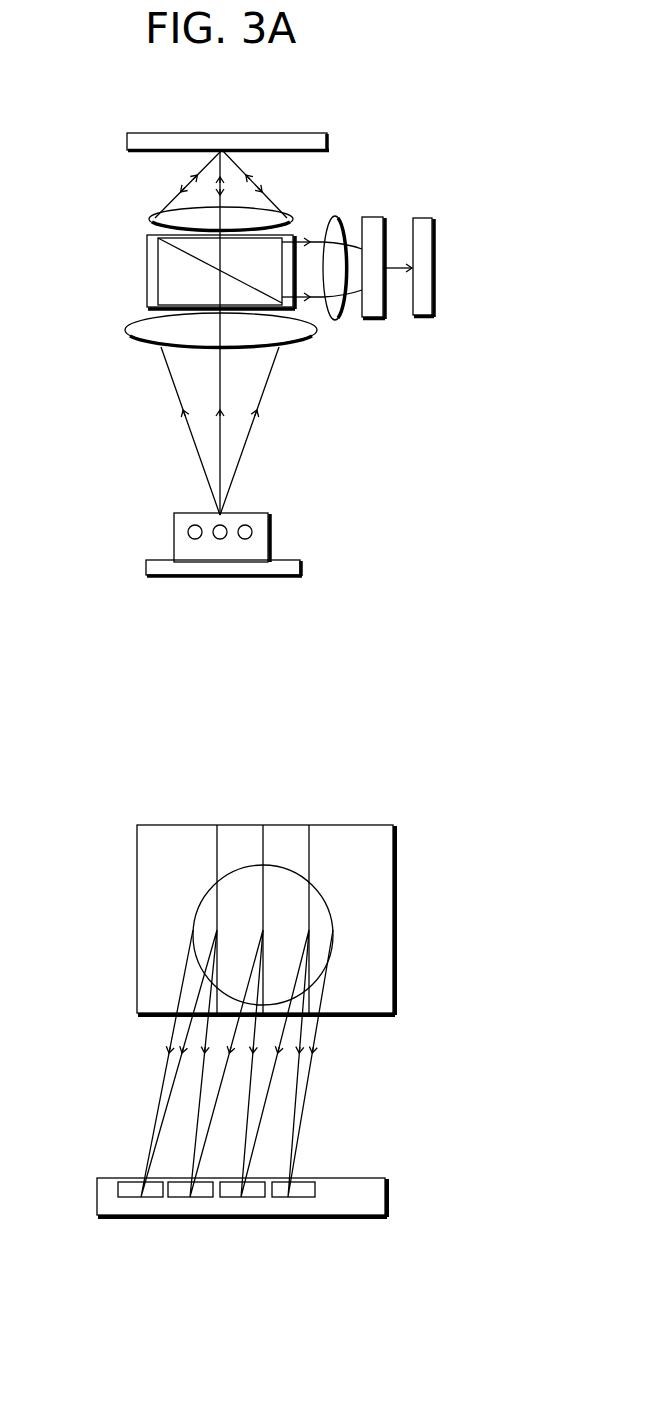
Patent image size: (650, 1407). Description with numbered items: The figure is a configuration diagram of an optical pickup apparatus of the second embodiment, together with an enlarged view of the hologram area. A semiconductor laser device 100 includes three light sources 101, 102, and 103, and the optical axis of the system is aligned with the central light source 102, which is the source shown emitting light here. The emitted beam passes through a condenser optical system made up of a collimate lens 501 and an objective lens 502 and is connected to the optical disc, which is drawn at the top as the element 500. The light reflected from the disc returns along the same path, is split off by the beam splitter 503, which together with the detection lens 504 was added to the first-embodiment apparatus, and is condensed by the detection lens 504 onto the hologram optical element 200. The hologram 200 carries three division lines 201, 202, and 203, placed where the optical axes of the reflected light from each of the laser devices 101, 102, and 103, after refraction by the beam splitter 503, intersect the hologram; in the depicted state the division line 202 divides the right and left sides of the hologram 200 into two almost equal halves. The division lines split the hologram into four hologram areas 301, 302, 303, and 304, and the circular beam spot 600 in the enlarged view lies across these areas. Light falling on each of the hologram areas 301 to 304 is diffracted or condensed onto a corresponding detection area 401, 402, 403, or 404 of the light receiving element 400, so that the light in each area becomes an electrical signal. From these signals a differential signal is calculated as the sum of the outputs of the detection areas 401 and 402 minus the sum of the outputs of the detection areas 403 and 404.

The semiconductor laser device 100 is at (280, 570).
The light source 101 is at (195, 539).
The central light source 102 is at (220, 539).
The light source 103 is at (245, 539).
The hologram optical element 200 is at (368, 318).
The division line 201 is at (217, 825).
The division line 202 is at (263, 825).
The division line 203 is at (309, 825).
The hologram area 301 is at (192, 845).
The hologram area 302 is at (240, 845).
The hologram area 303 is at (288, 845).
The hologram area 304 is at (338, 845).
The light receiving element 400 is at (423, 317).
The detection area 401 is at (120, 1217).
The detection area 402 is at (190, 1218).
The detection area 403 is at (227, 1218).
The detection area 404 is at (298, 1218).
The hologram optical element 500 is at (177, 132).
The collimate lens 501 is at (140, 331).
The objective lens 502 is at (156, 215).
The beam splitter 503 is at (148, 265).
The detection lens 504 is at (330, 218).
The beam spot 600 is at (333, 920).